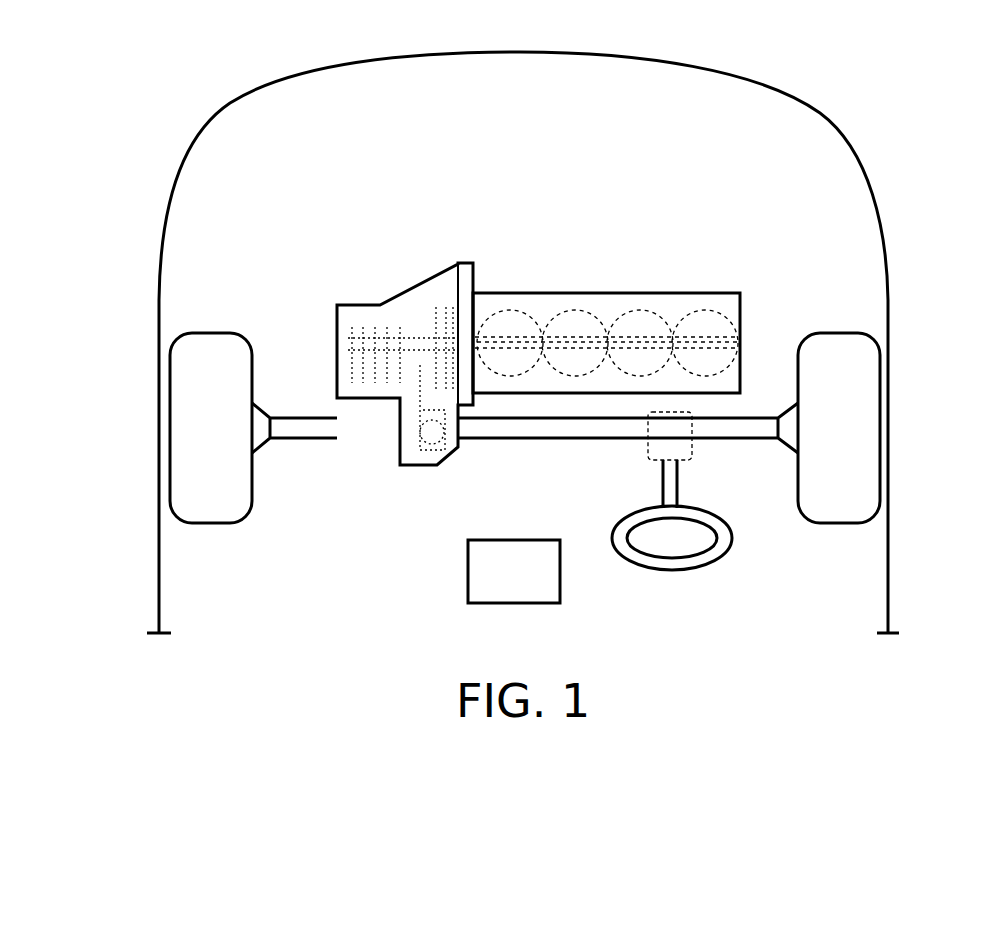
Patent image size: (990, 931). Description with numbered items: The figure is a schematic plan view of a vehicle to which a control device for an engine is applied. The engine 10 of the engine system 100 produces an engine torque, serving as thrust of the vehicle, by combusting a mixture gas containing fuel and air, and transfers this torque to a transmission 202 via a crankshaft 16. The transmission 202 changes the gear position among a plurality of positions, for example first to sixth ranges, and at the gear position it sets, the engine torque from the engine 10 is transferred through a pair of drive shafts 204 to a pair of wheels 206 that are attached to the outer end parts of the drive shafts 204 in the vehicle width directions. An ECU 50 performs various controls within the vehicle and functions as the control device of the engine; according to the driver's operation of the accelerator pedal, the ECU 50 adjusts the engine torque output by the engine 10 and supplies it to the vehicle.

The engine system 100 is at (652, 244).
The engine 10 is at (704, 293).
The crankshaft 16 is at (492, 318).
The transmission 202 is at (398, 298).
The drive shafts 204 is at (333, 440).
The wheels 206 is at (176, 410).
The ECU (Electronic Control Unit) 50 is at (467, 571).